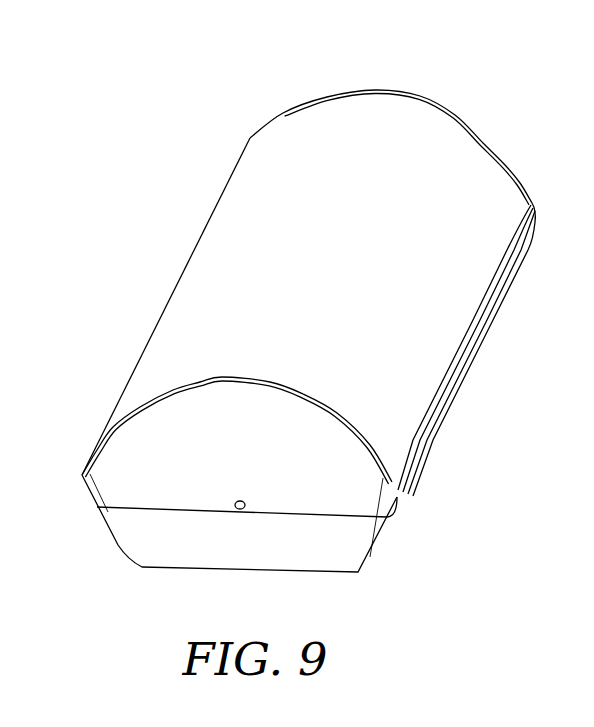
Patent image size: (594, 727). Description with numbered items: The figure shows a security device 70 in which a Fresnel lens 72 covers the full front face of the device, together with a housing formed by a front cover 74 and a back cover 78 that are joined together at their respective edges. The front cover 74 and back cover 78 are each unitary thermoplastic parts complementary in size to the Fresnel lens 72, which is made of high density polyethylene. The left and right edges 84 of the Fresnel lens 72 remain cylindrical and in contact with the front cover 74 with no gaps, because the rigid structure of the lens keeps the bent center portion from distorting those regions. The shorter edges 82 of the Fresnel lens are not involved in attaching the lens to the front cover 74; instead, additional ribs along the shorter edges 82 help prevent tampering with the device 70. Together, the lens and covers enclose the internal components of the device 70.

The device 70 is at (178, 78).
The Fresnel lens 72 is at (514, 183).
The front cover 74 is at (163, 443).
The back cover 78 is at (357, 542).
The shorter edges 82 is at (404, 100).
The left and right edges 84 is at (214, 208).